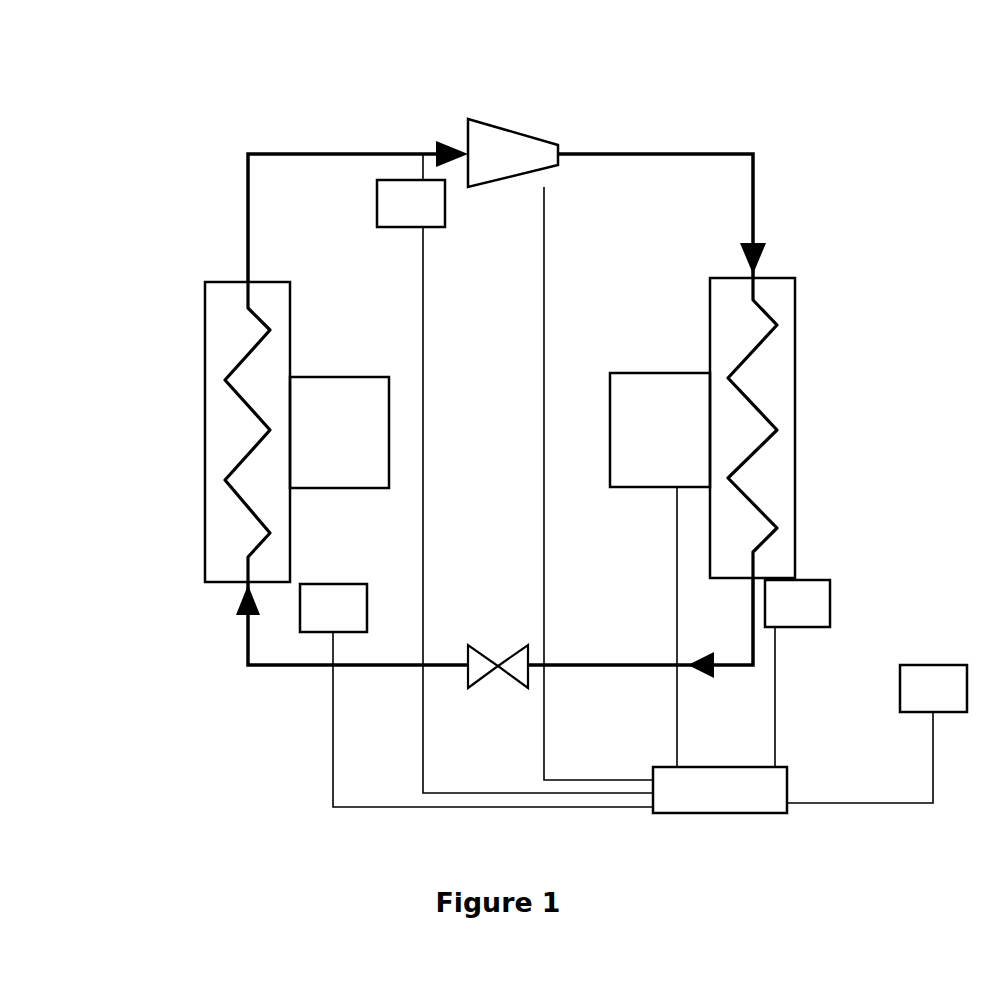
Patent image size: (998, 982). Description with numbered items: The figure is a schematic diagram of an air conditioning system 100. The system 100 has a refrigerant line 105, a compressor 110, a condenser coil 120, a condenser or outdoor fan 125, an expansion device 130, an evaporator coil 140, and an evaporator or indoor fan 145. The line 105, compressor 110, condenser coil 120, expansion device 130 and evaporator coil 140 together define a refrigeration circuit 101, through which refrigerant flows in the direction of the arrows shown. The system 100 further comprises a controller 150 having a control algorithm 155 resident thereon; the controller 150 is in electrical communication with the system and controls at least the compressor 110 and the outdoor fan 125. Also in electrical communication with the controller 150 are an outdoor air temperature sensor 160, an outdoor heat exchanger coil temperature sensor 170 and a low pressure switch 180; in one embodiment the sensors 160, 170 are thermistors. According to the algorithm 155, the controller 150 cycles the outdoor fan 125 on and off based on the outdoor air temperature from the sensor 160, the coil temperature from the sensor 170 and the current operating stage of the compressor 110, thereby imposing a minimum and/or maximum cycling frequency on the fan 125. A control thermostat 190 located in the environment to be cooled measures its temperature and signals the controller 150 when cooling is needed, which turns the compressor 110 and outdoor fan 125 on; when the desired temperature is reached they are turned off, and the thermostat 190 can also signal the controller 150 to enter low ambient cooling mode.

The air conditioning system 100 is at (138, 136).
The refrigeration circuit 101 is at (698, 153).
The refrigerant line 105 is at (300, 153).
The compressor 110 is at (510, 130).
The condenser coil 120 is at (709, 278).
The outdoor fan 125 is at (633, 373).
The expansion device 130 is at (477, 645).
The evaporator coil 140 is at (205, 318).
The indoor fan 145 is at (357, 377).
The controller 150 is at (745, 834).
The control algorithm 155 is at (753, 814).
The outdoor air temperature sensor 160 is at (877, 734).
The outdoor heat exchanger coil temperature sensor 170 is at (797, 673).
The low pressure switch 180 is at (515, 473).
The control thermostat 190 is at (476, 695).